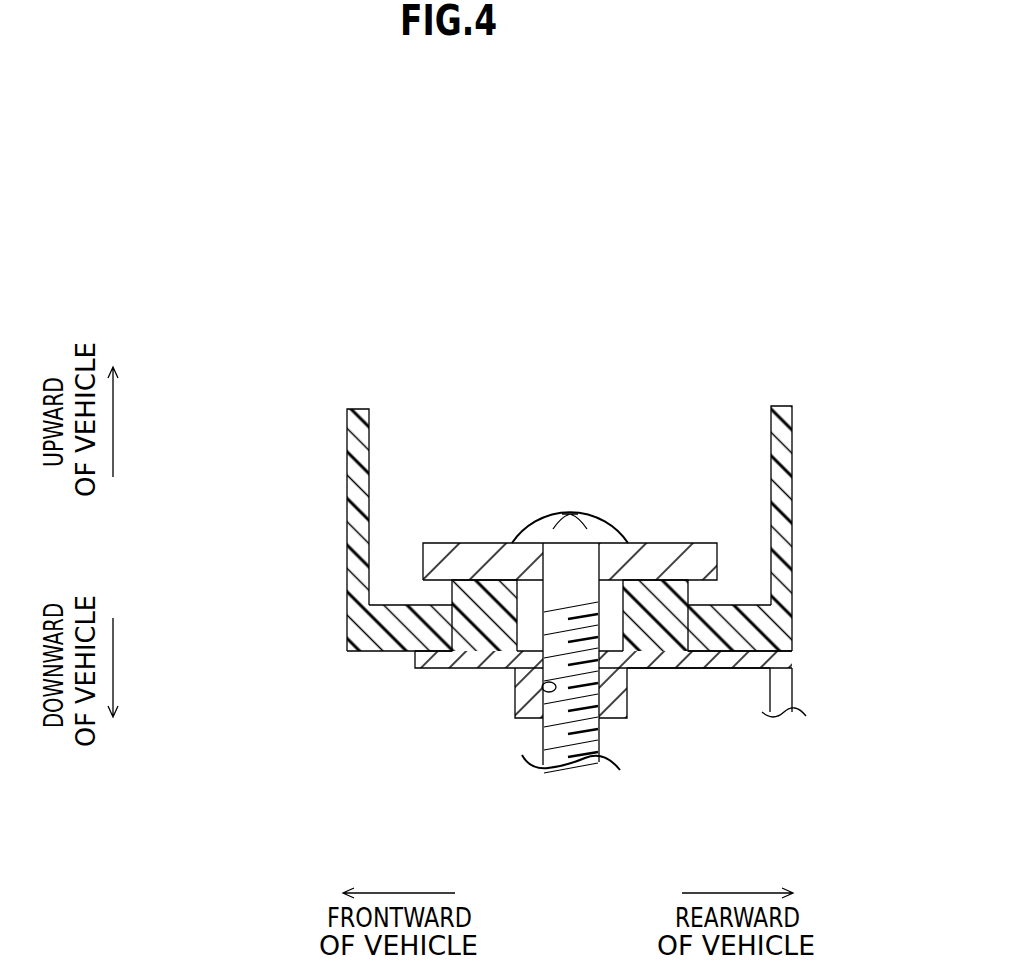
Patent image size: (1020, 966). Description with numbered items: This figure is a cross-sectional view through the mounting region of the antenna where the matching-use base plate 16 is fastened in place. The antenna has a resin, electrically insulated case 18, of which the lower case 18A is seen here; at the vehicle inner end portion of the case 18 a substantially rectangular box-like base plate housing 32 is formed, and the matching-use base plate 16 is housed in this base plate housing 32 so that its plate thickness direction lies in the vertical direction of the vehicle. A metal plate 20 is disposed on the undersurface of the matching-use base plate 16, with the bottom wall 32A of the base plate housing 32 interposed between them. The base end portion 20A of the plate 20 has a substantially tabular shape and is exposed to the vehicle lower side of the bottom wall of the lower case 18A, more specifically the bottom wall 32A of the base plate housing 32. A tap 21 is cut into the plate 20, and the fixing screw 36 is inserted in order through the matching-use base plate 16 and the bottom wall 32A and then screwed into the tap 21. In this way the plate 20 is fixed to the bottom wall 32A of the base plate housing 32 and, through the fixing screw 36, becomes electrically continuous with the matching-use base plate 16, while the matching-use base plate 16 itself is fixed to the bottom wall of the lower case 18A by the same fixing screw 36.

The matching-use base plate 16 is at (476, 558).
The case 18 is at (798, 440).
The lower case 18A is at (793, 513).
The plate 20 is at (797, 686).
The base end portion 20A is at (688, 663).
The tap 21 is at (545, 688).
The base plate housing 32 is at (374, 442).
The bottom wall 32A is at (386, 647).
The fixing screw 36 is at (605, 532).